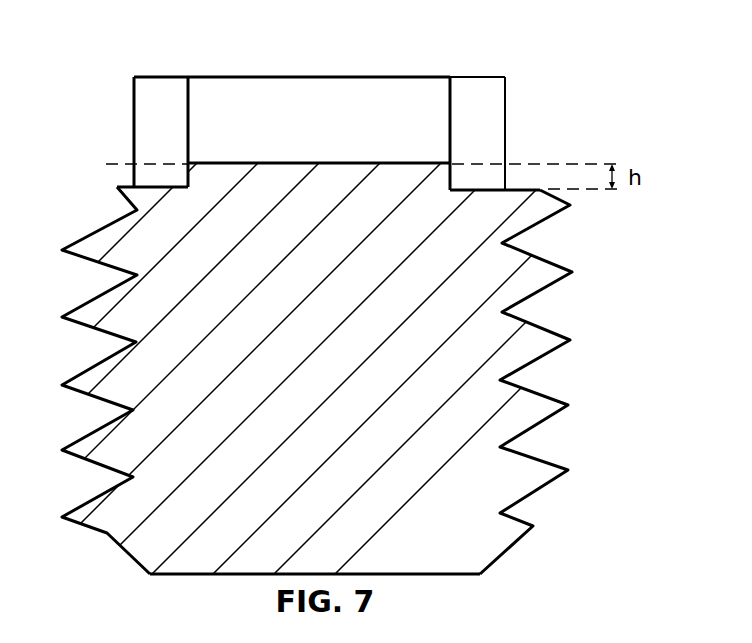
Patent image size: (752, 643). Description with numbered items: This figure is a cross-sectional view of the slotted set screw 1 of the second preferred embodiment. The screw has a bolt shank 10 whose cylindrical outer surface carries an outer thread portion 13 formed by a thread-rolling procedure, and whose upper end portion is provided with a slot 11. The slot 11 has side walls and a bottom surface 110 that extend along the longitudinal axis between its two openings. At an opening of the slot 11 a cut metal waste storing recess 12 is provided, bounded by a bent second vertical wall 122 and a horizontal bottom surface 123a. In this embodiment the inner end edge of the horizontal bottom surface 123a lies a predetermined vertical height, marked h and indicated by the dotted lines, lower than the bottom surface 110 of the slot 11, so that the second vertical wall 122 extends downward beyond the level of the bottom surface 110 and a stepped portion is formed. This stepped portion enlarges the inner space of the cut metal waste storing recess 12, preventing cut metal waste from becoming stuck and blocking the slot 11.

The slotted set screw 1 is at (374, 301).
The bolt shank 10 is at (374, 381).
The slot 11 is at (343, 108).
The bottom surface of the slot 110 is at (337, 155).
The cut metal waste storing recess 12 is at (510, 109).
The second vertical wall 122 is at (462, 98).
The horizontal bottom surface of the cut metal waste storing recess 123a is at (471, 182).
The outer thread portion 13 is at (556, 326).